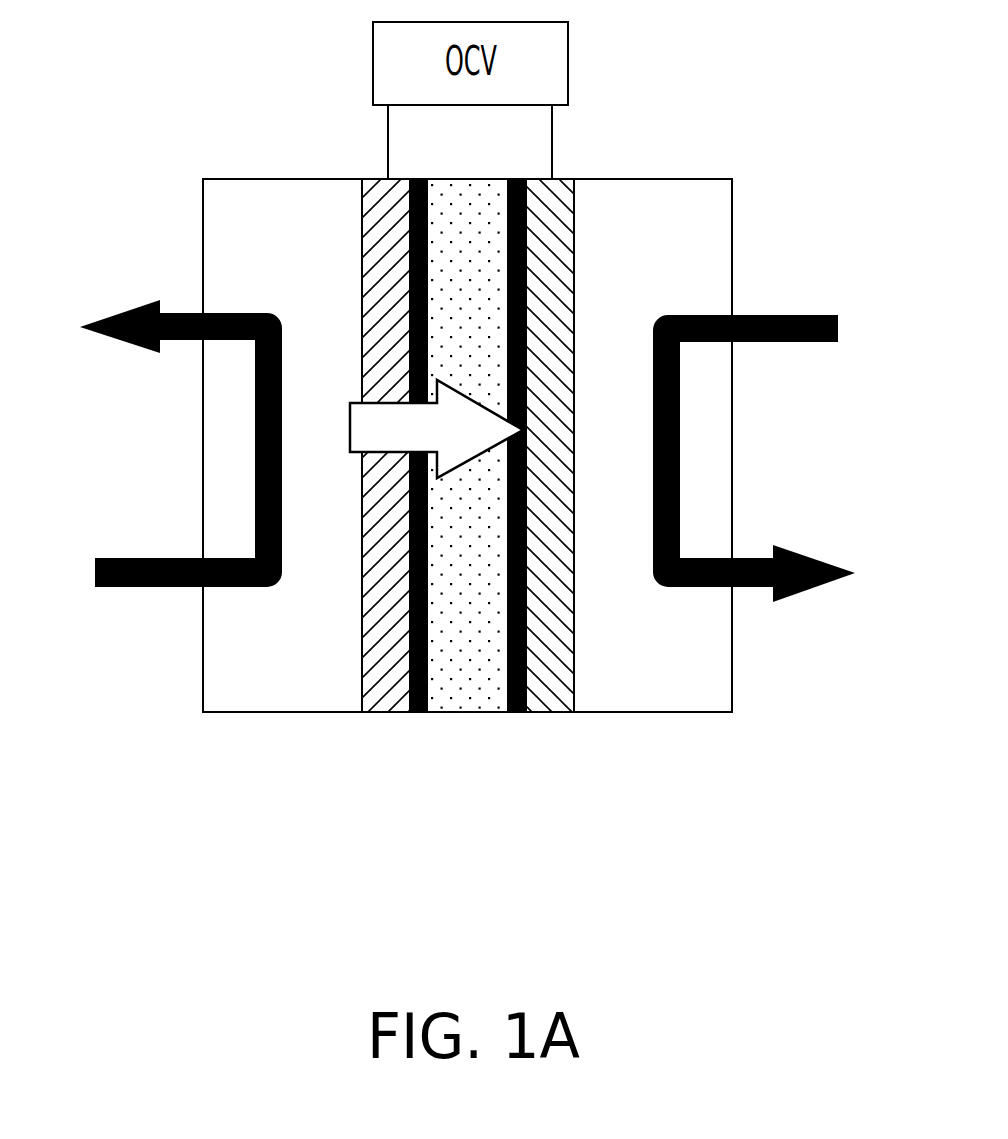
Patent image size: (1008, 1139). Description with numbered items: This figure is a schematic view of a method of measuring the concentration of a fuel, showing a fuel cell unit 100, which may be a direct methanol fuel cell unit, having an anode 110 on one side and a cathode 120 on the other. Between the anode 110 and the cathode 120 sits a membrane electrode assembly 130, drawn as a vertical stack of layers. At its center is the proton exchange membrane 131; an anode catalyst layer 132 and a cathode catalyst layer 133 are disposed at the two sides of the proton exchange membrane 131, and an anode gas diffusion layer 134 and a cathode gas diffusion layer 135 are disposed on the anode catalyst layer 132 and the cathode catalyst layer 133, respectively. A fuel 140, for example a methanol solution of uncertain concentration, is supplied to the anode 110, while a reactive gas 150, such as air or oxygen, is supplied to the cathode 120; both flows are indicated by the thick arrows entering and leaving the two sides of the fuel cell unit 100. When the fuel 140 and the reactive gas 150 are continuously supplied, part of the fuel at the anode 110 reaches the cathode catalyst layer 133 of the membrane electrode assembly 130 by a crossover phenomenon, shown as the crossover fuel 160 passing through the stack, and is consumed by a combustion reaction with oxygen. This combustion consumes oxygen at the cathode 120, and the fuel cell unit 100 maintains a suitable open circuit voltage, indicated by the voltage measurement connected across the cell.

The fuel cell unit 100 is at (852, 817).
The anode 110 is at (278, 194).
The cathode 120 is at (655, 194).
The membrane electrode assembly 130 is at (469, 558).
The proton exchange membrane 131 is at (465, 685).
The anode catalyst layer 132 is at (418, 713).
The cathode catalyst layer 133 is at (512, 713).
The anode gas diffusion layer 134 is at (383, 680).
The cathode gas diffusion layer 135 is at (585, 523).
The fuel 140 is at (152, 449).
The reactive gas 150 is at (781, 453).
The crossover fuel 160 is at (436, 429).